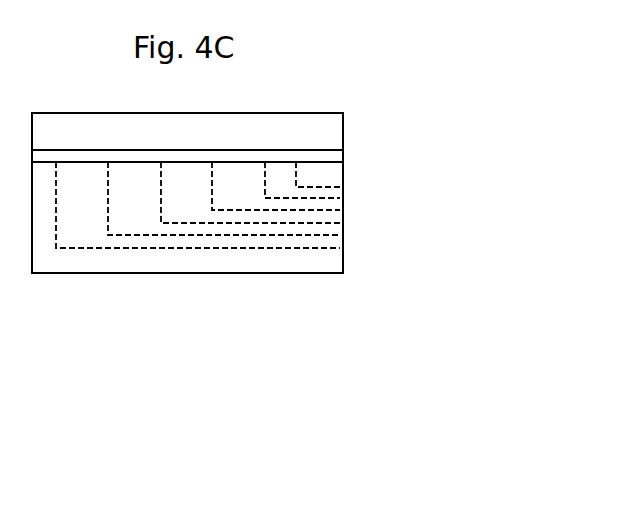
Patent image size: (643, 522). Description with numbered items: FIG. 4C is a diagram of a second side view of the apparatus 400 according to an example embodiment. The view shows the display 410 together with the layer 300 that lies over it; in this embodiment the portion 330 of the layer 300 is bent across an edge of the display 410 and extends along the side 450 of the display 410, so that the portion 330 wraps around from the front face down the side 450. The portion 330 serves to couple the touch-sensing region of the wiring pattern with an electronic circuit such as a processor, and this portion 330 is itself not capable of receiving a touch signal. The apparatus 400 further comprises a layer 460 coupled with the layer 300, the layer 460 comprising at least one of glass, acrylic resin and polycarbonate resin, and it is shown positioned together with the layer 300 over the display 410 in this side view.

The apparatus 400 is at (331, 143).
The layer 460 is at (343, 123).
The layer 300 is at (343, 152).
The display 410 is at (343, 263).
The side 450 is at (142, 258).
The portion 330 is at (277, 250).